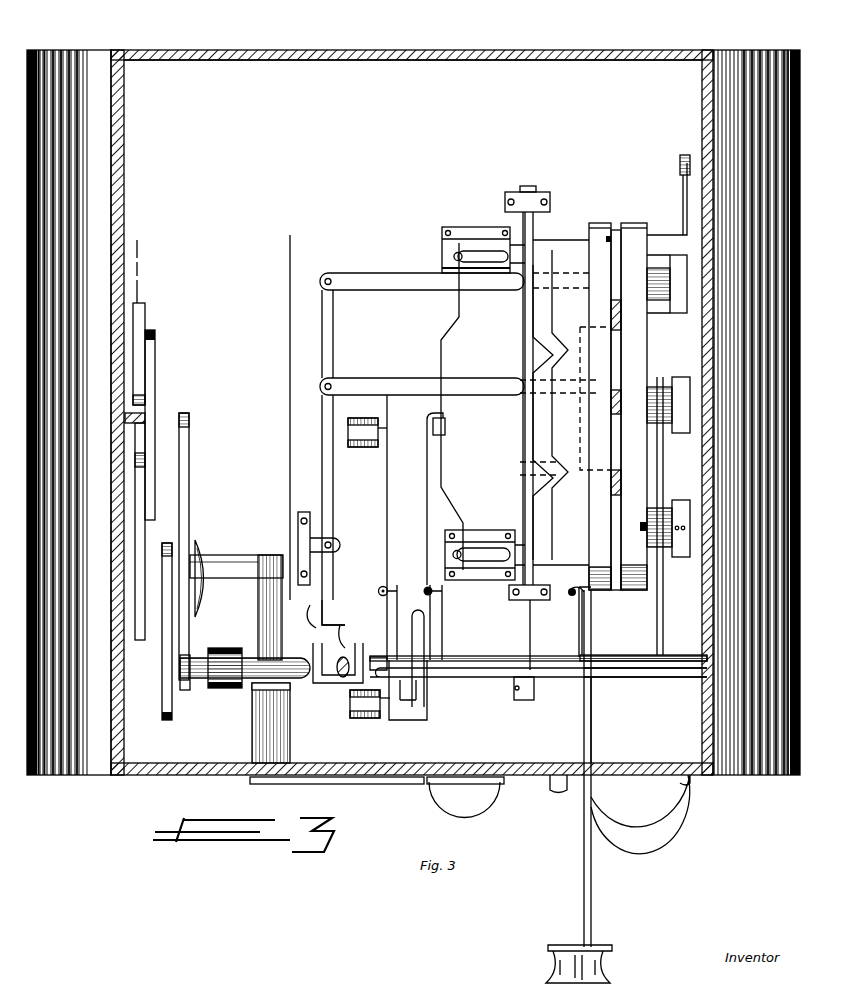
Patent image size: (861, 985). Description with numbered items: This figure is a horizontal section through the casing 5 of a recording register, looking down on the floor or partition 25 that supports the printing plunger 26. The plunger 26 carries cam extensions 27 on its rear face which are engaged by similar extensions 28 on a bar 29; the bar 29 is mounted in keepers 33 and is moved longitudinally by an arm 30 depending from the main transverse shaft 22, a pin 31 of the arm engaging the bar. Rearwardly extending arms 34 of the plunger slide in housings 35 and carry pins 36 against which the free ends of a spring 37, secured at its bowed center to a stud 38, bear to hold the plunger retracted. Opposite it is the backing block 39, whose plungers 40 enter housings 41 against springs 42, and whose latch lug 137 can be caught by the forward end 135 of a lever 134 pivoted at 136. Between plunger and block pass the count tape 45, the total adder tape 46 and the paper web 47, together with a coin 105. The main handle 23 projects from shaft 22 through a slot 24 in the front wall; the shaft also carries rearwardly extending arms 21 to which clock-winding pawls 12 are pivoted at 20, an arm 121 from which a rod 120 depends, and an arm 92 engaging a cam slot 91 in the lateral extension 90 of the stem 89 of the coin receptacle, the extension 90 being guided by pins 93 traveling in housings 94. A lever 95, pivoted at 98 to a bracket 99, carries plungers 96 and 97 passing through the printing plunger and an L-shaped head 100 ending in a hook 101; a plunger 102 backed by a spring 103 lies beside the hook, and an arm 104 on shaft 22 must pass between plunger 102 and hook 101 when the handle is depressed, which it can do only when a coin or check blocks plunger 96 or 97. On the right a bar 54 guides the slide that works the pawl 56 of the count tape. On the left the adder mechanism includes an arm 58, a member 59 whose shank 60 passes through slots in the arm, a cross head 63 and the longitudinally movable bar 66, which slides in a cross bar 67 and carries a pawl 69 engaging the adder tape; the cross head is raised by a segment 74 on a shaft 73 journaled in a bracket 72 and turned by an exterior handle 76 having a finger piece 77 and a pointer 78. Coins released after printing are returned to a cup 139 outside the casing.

The casing 5 is at (470, 50).
The floor or partition 25 is at (413, 411).
The paper web 47 is at (290, 403).
The count tape 45 is at (140, 250).
The total adder tape 46 is at (140, 287).
The pawl 69 is at (145, 332).
The longitudinally movable bar 66 is at (156, 413).
The arm 58 is at (189, 634).
The cross head 63 is at (167, 542).
The cross bar 67 is at (140, 741).
The shank 60 is at (200, 585).
The shank-carrying member 59 is at (205, 560).
The segment 74 is at (256, 556).
The shaft 73 is at (262, 616).
The bracket 72 is at (253, 725).
The L-shaped head 100 is at (320, 680).
The plunger 102 is at (321, 614).
The hook extension 101 is at (347, 627).
The spring 103 is at (333, 660).
The arm 104 is at (374, 641).
The plunger 97 is at (406, 283).
The plunger 96 is at (376, 385).
The lever 95 is at (333, 497).
The lateral extension 90 is at (402, 490).
The stem 89 is at (495, 398).
The housings 35 is at (470, 232).
The pins 36 is at (453, 257).
The spring 37 is at (462, 303).
The stud 38 is at (446, 429).
The pins 93 is at (379, 433).
The housings 94 is at (366, 446).
The keepers 33 is at (548, 195).
The arms 34 is at (540, 252).
The cam extensions 27 is at (550, 340).
The extensions 28 is at (532, 354).
The bar 29 is at (530, 437).
The latch lug 137 is at (611, 428).
The printing plunger 26 is at (611, 406).
The backing block 39 is at (617, 380).
The coin 105 is at (620, 378).
The pawl 56 is at (683, 197).
The housings 41 is at (674, 265).
The plungers 40 is at (665, 302).
The springs 42 is at (658, 387).
The forward end 135 is at (660, 441).
The pivot 136 is at (650, 527).
The pawls 12 is at (382, 588).
The pivot 20 is at (392, 588).
The arms 21 is at (390, 608).
The cam slot 91 is at (425, 631).
The arm 92 is at (418, 697).
The pin 31 is at (512, 690).
The arm 30 is at (515, 691).
The rod 120 is at (569, 597).
The arm 121 is at (583, 624).
The main manually operable handle 23 is at (592, 734).
The slot 24 is at (598, 765).
The lever 134 is at (660, 646).
The main transverse shaft 22 is at (645, 715).
The bar 54 is at (698, 720).
The handle 76 is at (375, 784).
The pointer 78 is at (505, 785).
The finger piece 77 is at (464, 799).
The cup 139 is at (690, 813).
The bracket 99 is at (310, 534).
The pivot 98 is at (332, 547).